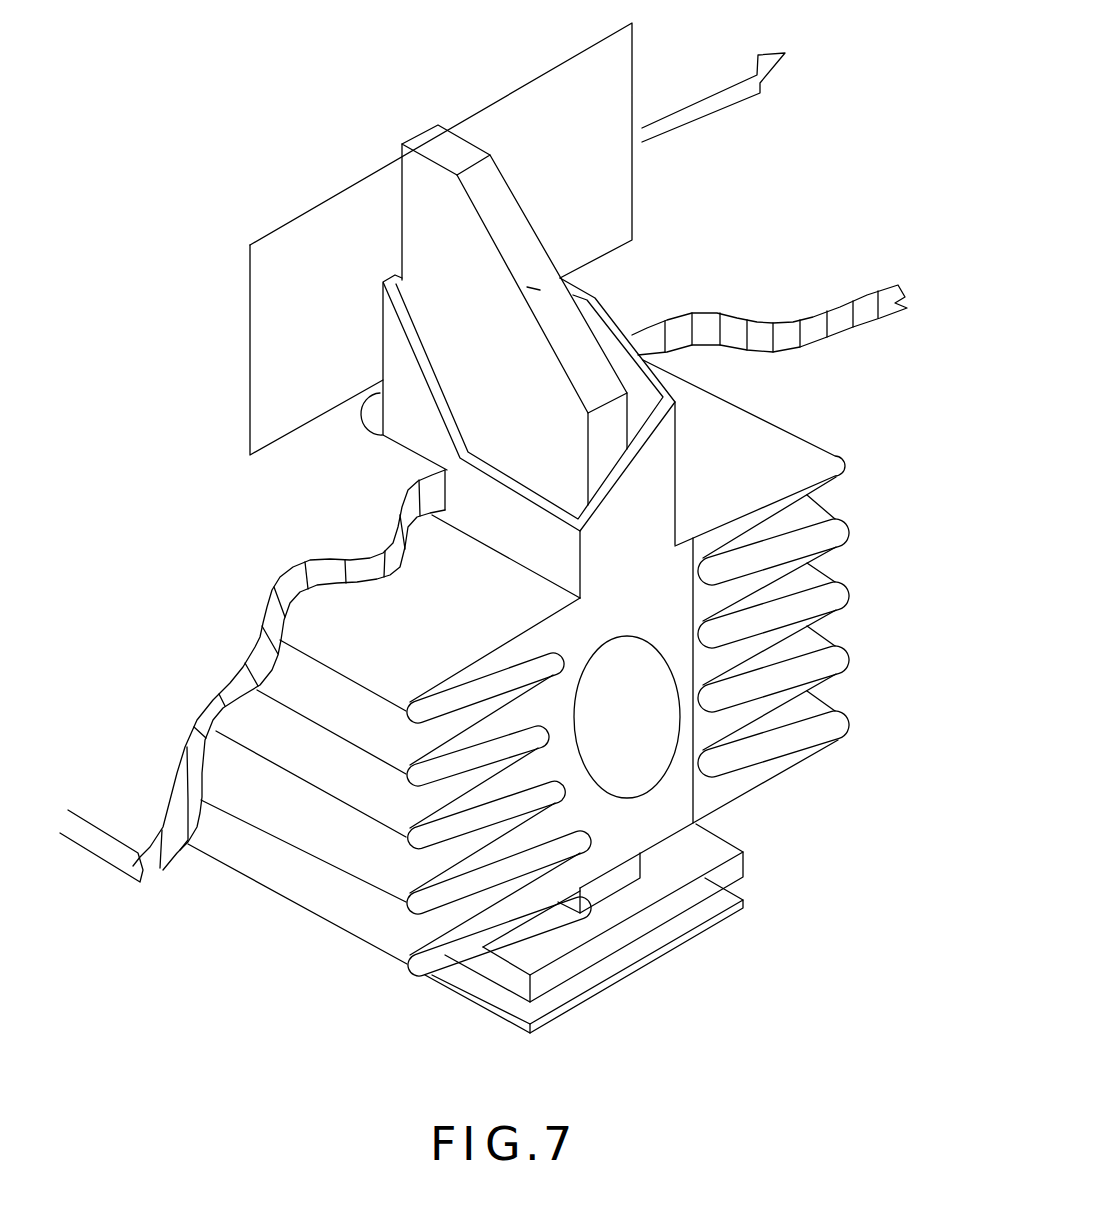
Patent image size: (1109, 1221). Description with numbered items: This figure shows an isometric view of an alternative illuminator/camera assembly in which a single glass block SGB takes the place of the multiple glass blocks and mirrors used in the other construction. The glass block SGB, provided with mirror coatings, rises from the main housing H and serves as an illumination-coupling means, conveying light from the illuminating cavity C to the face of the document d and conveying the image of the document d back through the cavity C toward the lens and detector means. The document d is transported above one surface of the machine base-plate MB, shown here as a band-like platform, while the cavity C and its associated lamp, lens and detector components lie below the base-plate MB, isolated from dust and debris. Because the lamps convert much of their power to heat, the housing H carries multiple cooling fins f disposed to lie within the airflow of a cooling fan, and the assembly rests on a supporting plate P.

The document d is at (542, 88).
The single glass block SGB is at (432, 132).
The main housing H is at (415, 422).
The machine base-plate MB is at (898, 283).
The cooling fin f is at (848, 453).
The illuminating cavity C is at (653, 747).
The plate P is at (745, 900).